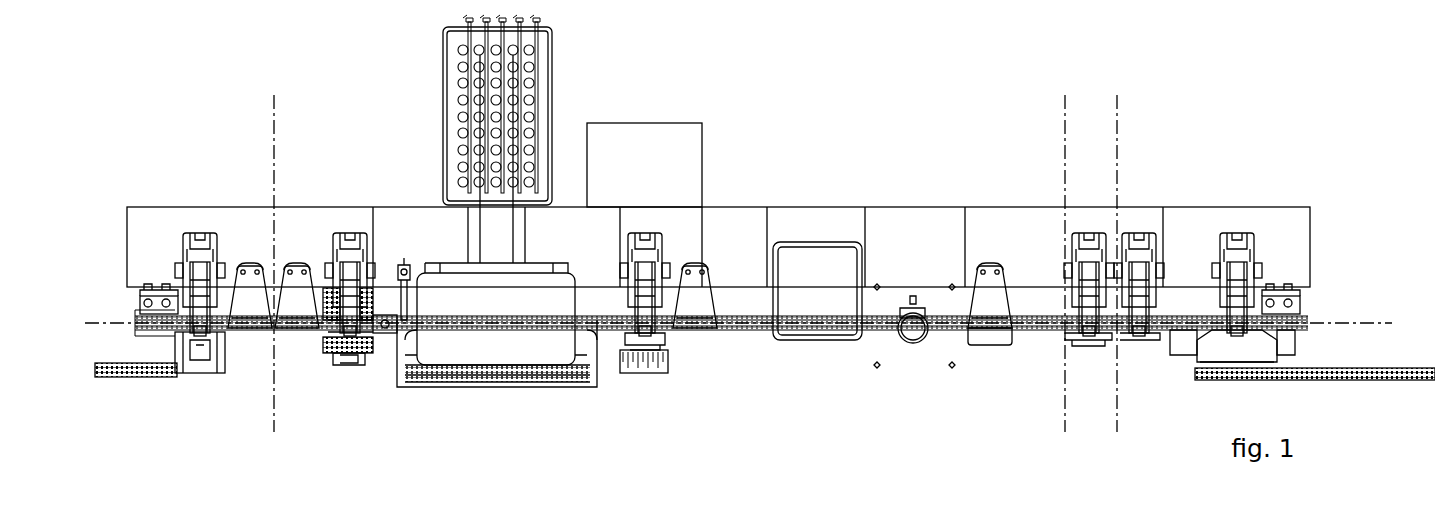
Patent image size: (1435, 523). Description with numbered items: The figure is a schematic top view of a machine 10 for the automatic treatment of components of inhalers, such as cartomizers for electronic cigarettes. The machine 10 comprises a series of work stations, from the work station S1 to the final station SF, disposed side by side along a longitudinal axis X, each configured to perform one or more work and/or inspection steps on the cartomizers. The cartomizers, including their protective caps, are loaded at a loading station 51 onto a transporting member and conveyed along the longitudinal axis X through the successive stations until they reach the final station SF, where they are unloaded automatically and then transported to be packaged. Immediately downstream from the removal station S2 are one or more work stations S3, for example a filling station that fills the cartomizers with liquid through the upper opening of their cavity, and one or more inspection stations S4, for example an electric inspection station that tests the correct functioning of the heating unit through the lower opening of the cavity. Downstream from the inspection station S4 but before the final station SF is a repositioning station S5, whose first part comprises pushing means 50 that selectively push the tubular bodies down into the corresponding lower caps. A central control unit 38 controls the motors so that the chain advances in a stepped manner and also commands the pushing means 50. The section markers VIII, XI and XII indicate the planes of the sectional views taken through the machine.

The machine 10 is at (1269, 102).
The work station S1 is at (197, 205).
The removal station S2 is at (355, 205).
The work station S3 is at (568, 142).
The inspection station S4 is at (835, 205).
The repositioning station S5 is at (1158, 205).
The final station SF is at (1273, 205).
The central control unit 38 is at (669, 146).
The pushing means 50 is at (1088, 266).
The loading station 51 is at (1139, 261).
The longitudinal axis X is at (1382, 321).
The section line VIII is at (272, 109).
The section line XI is at (1063, 109).
The section line XII is at (1115, 109).